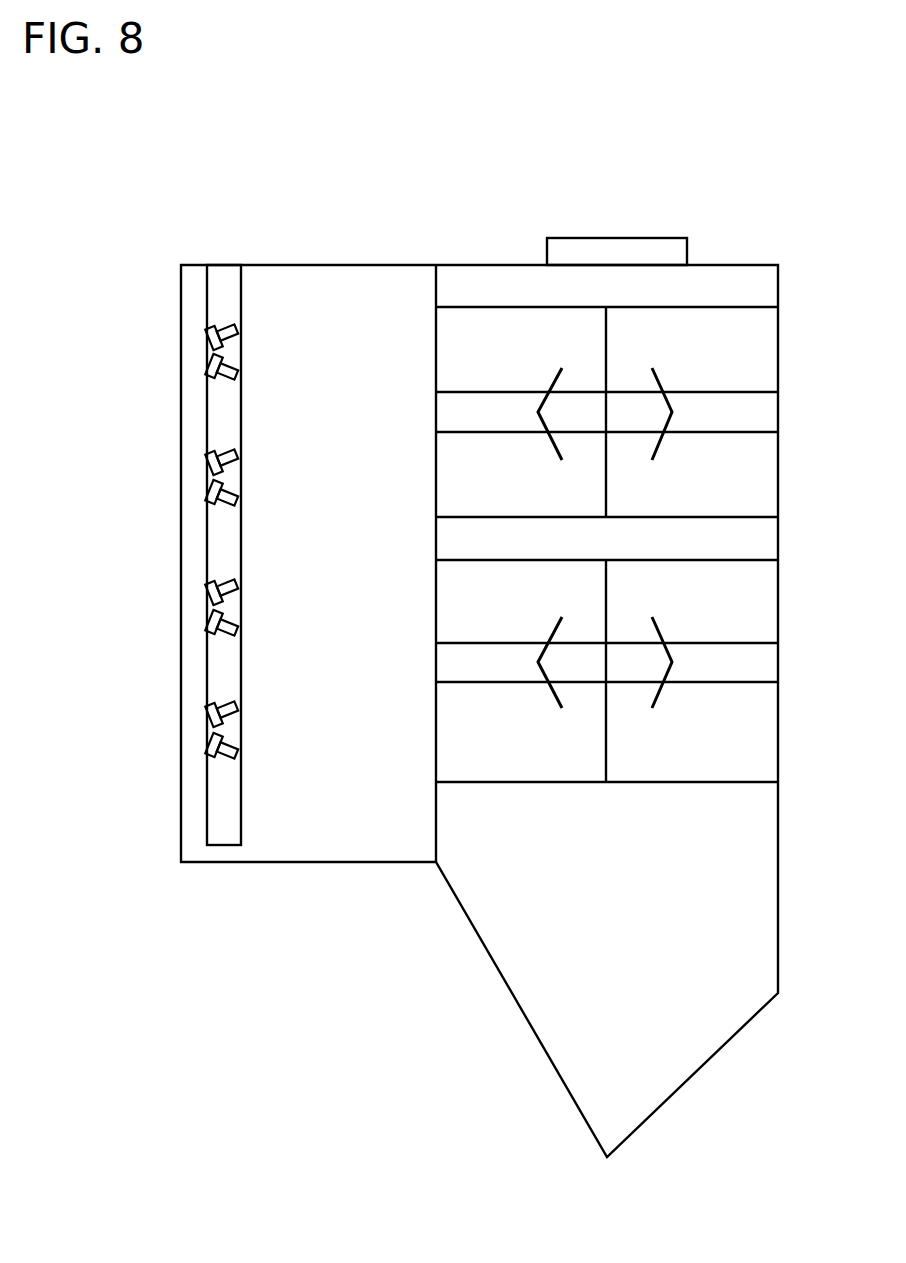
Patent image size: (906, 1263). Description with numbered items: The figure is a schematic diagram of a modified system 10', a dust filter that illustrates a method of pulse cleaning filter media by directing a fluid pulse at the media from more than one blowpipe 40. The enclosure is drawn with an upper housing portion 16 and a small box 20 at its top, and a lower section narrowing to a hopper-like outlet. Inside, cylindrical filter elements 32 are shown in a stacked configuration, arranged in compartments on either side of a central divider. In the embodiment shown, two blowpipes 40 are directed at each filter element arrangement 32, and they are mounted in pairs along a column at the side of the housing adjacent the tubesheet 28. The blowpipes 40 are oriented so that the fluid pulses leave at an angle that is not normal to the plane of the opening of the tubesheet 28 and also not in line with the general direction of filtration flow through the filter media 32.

The modified system 10' is at (479, 596).
The furnace enclosure wall 16 is at (745, 264).
The top duct / outlet box 20 is at (687, 238).
The tubesheet 28 is at (440, 804).
The cylindrical filter elements 32 is at (607, 544).
The blowpipe 40 is at (233, 329).